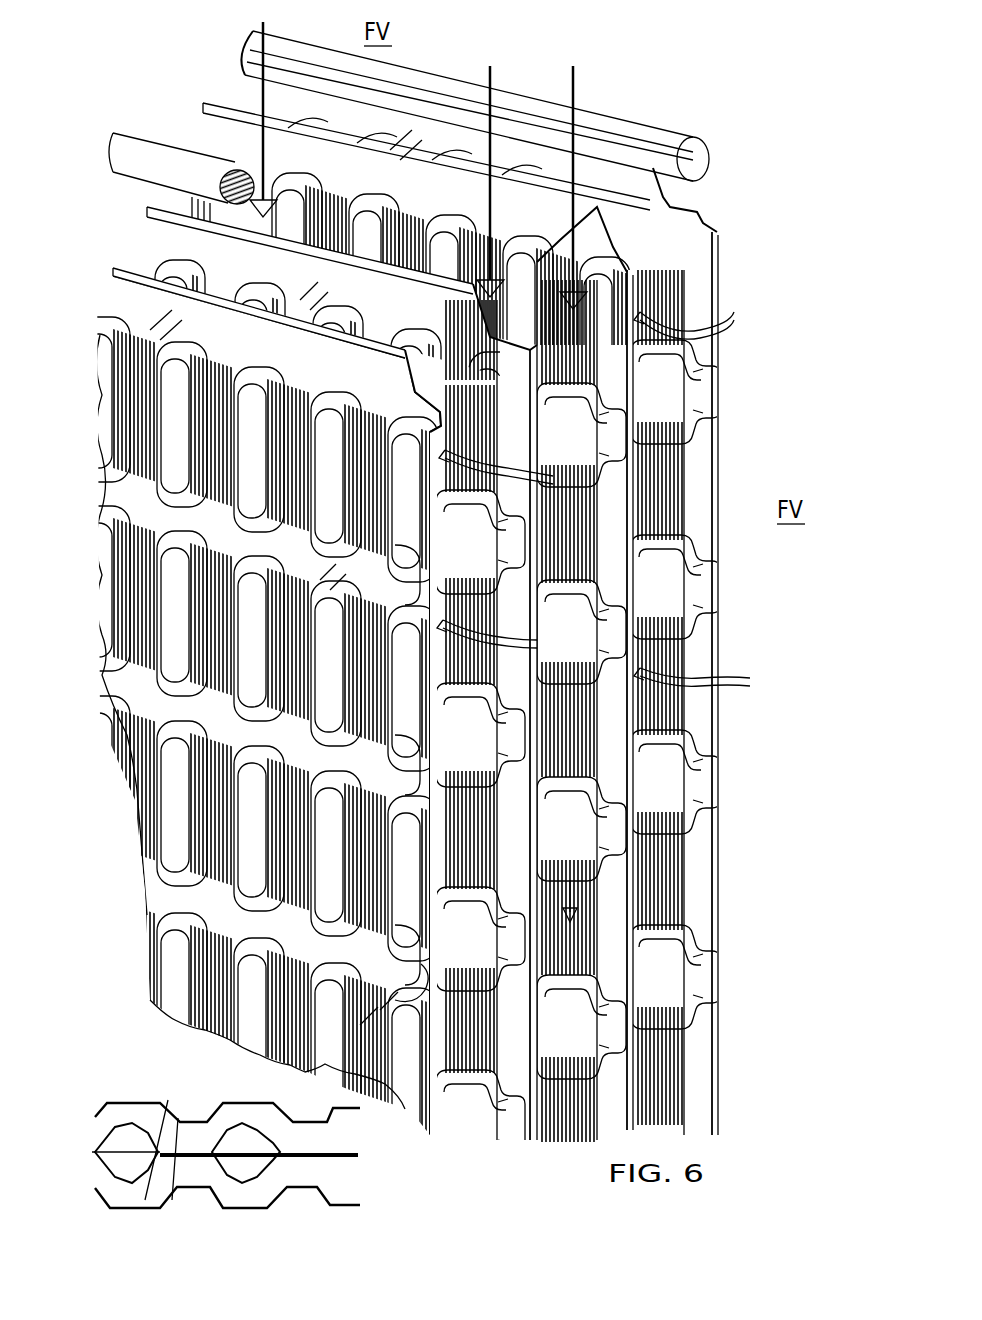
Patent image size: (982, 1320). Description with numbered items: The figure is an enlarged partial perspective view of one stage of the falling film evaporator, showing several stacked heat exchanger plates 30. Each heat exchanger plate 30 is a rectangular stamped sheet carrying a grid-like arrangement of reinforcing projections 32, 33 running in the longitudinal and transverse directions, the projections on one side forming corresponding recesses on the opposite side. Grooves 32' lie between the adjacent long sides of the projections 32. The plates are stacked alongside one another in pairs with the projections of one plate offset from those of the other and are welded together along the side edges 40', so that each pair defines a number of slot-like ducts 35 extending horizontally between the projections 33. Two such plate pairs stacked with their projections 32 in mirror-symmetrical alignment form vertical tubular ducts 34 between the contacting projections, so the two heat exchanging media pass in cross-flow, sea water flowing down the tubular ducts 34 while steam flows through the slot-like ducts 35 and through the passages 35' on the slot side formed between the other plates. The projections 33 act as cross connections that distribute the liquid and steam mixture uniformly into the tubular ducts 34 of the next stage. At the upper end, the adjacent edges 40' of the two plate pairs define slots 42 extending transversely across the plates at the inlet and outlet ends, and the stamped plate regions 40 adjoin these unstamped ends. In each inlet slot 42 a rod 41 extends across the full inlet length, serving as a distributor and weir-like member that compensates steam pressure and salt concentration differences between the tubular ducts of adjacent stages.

The heat exchanger plate 30 is at (744, 184).
The reinforcing projections 32 is at (377, 759).
The grooves 32' is at (277, 1054).
The reinforcing projections 33 is at (154, 858).
The tubular ducts 34 is at (117, 1168).
The slot-like ducts 35 is at (226, 1139).
The flow passage between plates 35' is at (591, 773).
The spacer strip 40 is at (562, 708).
The side edges 40' is at (379, 527).
The rod 41 is at (628, 138).
The slots 42 is at (170, 195).